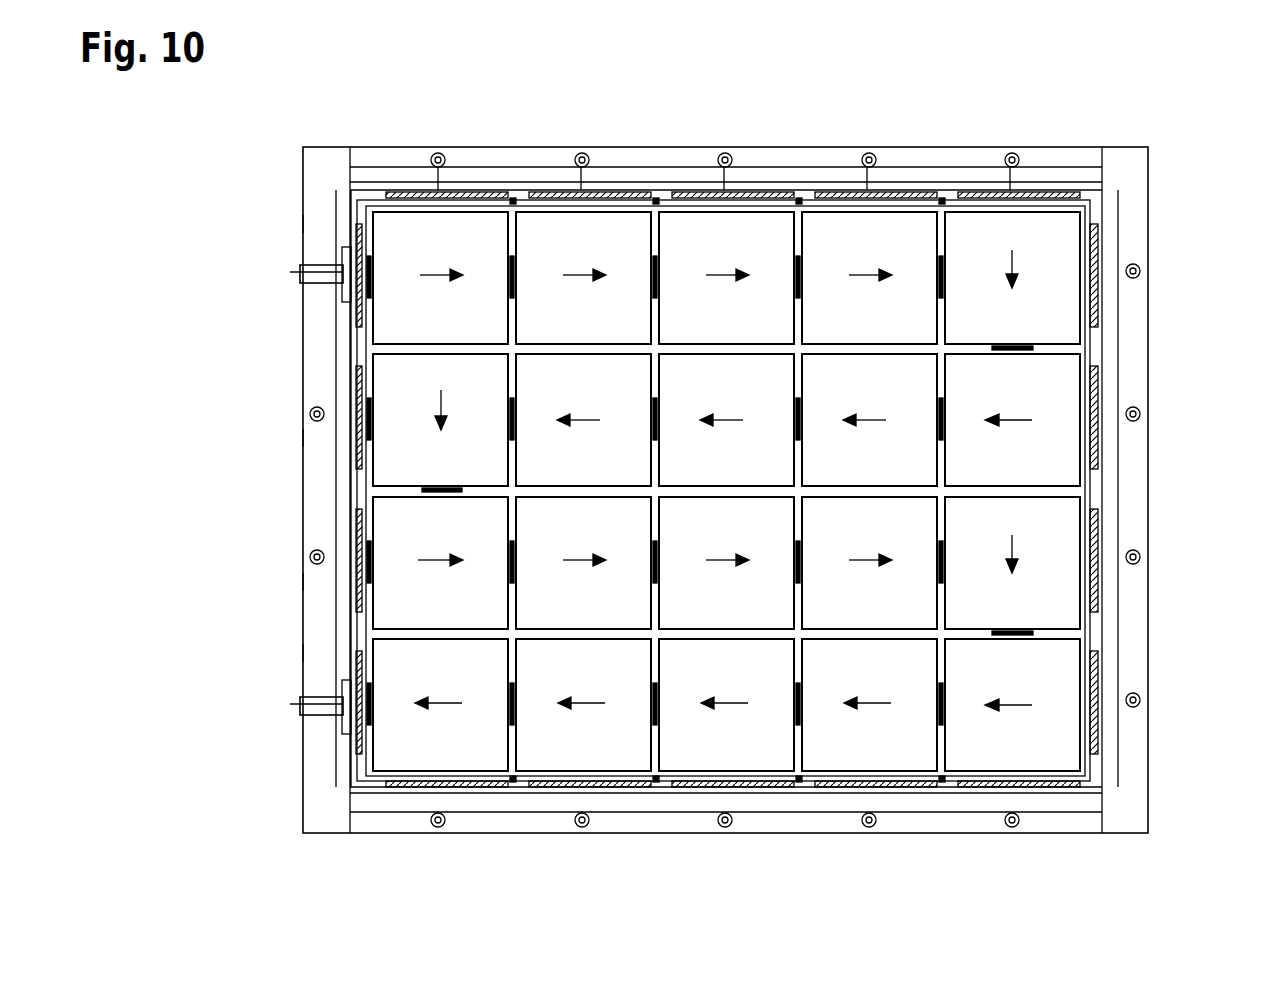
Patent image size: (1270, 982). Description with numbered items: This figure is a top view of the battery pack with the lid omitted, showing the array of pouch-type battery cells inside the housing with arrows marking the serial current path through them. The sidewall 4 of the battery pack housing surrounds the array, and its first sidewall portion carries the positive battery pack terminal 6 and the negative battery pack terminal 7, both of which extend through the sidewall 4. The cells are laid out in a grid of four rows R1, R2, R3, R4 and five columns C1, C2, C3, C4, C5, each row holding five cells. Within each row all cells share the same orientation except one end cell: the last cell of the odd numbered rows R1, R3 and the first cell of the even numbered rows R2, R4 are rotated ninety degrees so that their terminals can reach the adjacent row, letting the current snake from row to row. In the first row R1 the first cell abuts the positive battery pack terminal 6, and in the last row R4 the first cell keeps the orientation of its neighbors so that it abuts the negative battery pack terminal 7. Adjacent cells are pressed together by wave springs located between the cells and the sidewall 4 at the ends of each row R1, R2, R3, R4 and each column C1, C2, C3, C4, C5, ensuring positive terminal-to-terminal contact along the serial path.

The sidewall 4 is at (313, 358).
The positive battery pack terminal 6 is at (300, 272).
The negative battery pack terminal 7 is at (300, 704).
The first row R1 is at (305, 224).
The second row R2 is at (305, 438).
The third row R3 is at (305, 582).
The fourth row R4 is at (305, 653).
The first column C1 is at (467, 162).
The second column C2 is at (610, 162).
The third column C3 is at (753, 162).
The fourth column C4 is at (896, 162).
The fifth column C5 is at (1039, 162).